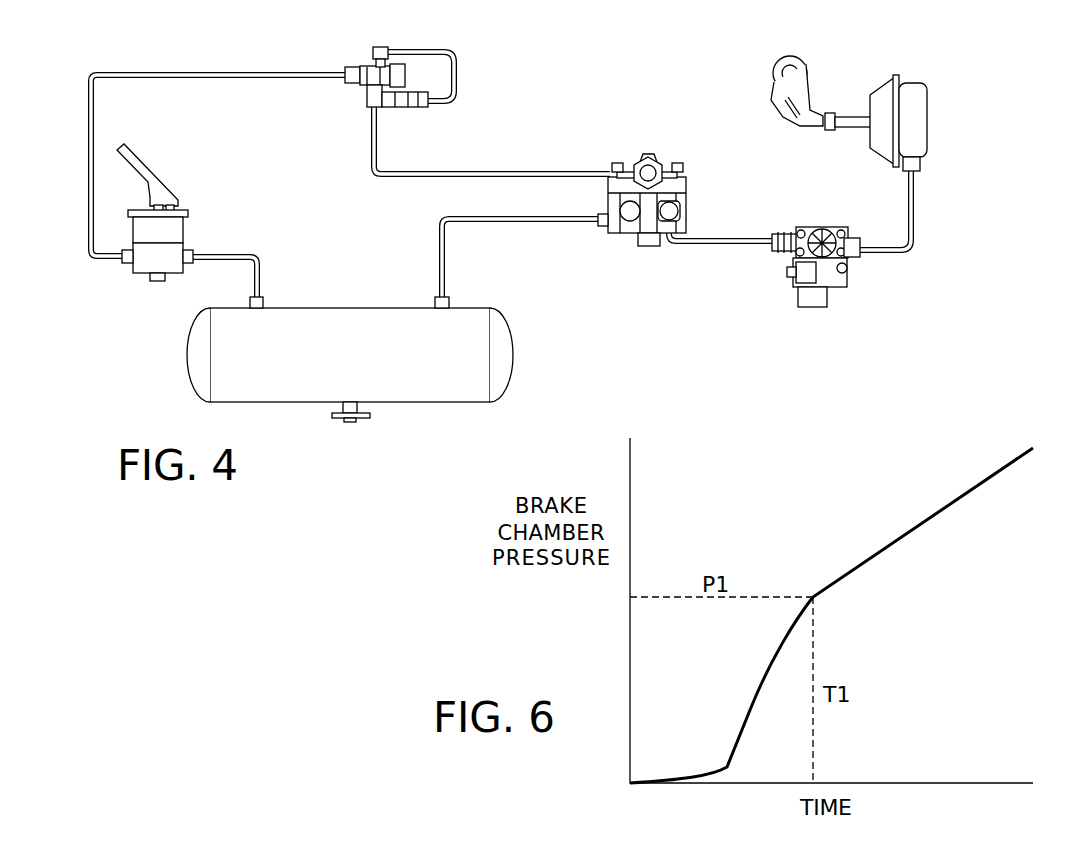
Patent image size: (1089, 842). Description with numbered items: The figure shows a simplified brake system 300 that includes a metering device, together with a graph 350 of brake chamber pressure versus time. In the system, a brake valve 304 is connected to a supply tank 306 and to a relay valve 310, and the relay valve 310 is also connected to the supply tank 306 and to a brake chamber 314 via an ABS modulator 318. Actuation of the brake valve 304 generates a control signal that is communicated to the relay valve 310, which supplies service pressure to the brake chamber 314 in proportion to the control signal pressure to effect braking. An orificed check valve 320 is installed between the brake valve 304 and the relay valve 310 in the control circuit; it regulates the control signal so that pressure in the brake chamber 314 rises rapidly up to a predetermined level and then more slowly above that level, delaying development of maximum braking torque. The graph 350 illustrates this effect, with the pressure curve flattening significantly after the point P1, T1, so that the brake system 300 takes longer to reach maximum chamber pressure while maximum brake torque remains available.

In FIG. 4, the brake system 300 is at (545, 106).
In FIG. 4, the brake valve 304 is at (145, 267).
In FIG. 4, the supply tank 306 is at (503, 340).
In FIG. 4, the relay valve 310 is at (677, 192).
In FIG. 4, the brake chamber 314 is at (918, 110).
In FIG. 4, the ABS modulator 318 is at (842, 275).
In FIG. 4, the orificed check valve 320 is at (466, 56).
In FIG. 6, the graph 350 is at (813, 496).